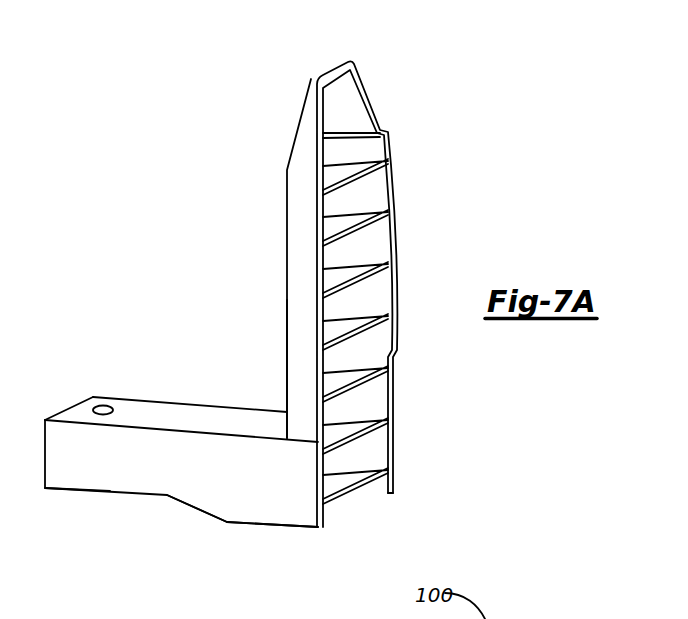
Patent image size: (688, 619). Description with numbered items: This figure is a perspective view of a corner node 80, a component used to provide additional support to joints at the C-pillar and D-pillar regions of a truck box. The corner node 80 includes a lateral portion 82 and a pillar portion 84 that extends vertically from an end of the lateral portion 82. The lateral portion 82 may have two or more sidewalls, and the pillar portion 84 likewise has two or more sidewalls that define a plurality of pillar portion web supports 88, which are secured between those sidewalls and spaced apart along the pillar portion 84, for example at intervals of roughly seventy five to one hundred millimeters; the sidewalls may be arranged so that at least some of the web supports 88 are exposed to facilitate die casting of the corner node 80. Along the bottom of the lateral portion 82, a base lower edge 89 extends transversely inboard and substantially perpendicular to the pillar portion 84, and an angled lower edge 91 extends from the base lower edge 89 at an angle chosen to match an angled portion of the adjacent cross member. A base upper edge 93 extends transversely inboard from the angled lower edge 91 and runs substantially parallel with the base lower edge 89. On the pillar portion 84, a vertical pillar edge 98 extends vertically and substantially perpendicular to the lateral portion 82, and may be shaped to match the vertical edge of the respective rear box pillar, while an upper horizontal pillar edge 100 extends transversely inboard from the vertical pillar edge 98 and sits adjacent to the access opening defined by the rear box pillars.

The corner node 80 is at (212, 74).
The lateral portion 82 is at (160, 415).
The pillar portion 84 is at (287, 200).
The pillar portion web supports 88 is at (357, 175).
The base lower edge 89 is at (267, 526).
The angled lower edge 91 is at (195, 507).
The base upper edge 93 is at (80, 489).
The vertical pillar edge 98 is at (313, 272).
The upper horizontal pillar edge 100 is at (312, 79).